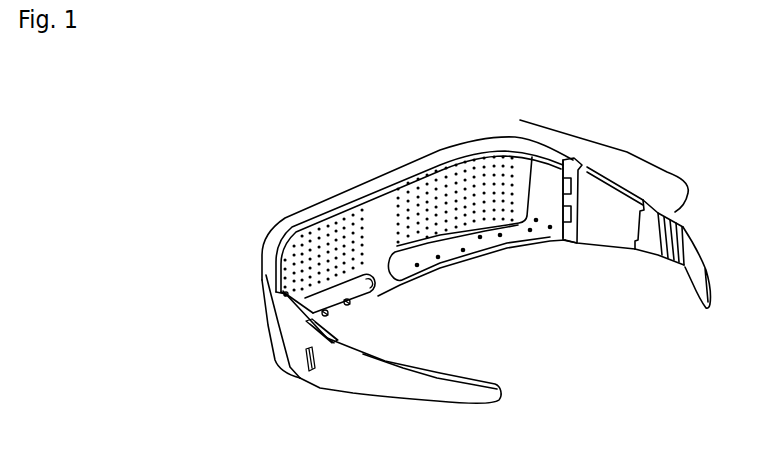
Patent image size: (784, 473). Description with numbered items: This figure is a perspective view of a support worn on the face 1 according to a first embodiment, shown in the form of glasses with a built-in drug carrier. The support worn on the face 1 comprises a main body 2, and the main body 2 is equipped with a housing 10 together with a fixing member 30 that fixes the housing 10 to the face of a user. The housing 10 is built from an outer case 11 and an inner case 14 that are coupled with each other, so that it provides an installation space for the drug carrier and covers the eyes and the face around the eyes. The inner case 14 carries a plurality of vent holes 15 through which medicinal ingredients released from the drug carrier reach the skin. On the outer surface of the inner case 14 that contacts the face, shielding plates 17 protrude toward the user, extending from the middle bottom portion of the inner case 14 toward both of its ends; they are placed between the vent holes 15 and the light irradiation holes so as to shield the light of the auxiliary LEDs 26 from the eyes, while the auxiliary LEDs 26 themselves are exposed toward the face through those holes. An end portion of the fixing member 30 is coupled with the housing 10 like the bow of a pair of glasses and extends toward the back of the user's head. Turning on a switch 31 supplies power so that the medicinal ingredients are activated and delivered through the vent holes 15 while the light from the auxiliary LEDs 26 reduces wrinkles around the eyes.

The support worn on the face 1 is at (675, 137).
The main body 2 is at (343, 96).
The housing 10 is at (322, 130).
The outer case 11 is at (362, 180).
The inner case 14 is at (388, 208).
The vent holes 15 is at (320, 236).
The shielding plates 17 is at (380, 296).
The auxiliary LEDs 26 is at (352, 307).
The fixing member 30 is at (520, 120).
The switch 31 is at (306, 364).